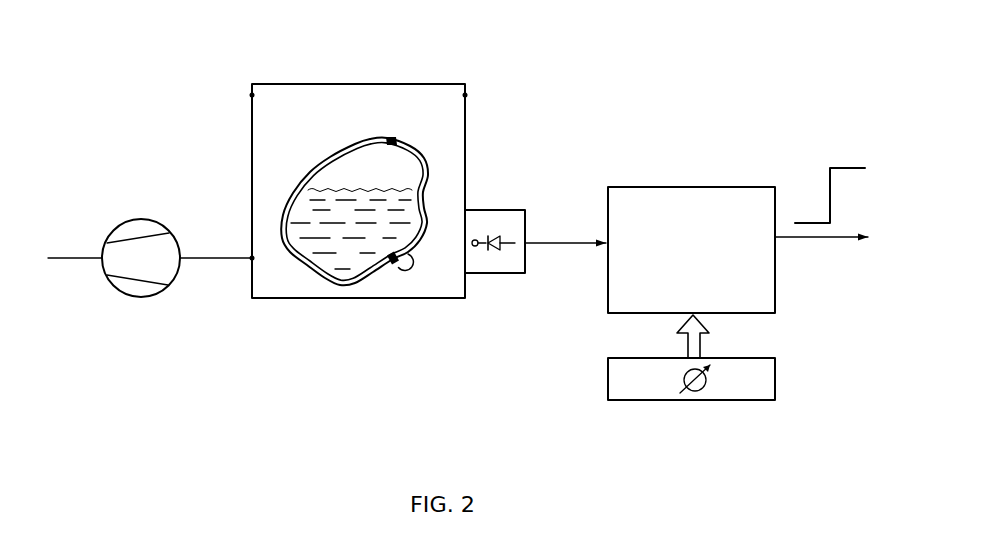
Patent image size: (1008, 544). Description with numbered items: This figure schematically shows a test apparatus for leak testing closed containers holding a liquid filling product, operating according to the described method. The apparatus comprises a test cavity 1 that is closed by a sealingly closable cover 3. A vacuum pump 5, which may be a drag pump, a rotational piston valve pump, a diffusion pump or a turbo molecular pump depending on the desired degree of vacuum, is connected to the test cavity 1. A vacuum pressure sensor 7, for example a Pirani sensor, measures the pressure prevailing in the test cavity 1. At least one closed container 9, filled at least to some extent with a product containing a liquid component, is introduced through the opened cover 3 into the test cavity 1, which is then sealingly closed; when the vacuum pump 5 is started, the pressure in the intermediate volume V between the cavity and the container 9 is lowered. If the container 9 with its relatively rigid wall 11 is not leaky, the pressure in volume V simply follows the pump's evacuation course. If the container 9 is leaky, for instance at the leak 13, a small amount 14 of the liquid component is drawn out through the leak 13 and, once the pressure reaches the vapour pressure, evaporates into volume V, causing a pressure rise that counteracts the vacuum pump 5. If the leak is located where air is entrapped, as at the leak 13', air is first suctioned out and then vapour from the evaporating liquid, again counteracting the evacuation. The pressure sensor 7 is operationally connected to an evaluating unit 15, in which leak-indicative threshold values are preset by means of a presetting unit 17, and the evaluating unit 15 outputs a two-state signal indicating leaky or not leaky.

The test cavity 1 is at (466, 128).
The sealingly closable cover 3 is at (370, 82).
The vacuum pump 5 is at (133, 300).
The vacuum pressure sensor 7 is at (502, 273).
The closed container 9 is at (325, 280).
The wall 11 is at (297, 192).
The leak 13 is at (368, 306).
The leak 13' is at (403, 118).
The small amount of liquid component 14 is at (410, 265).
The evaluating unit 15 is at (688, 187).
The presetting unit 17 is at (650, 400).